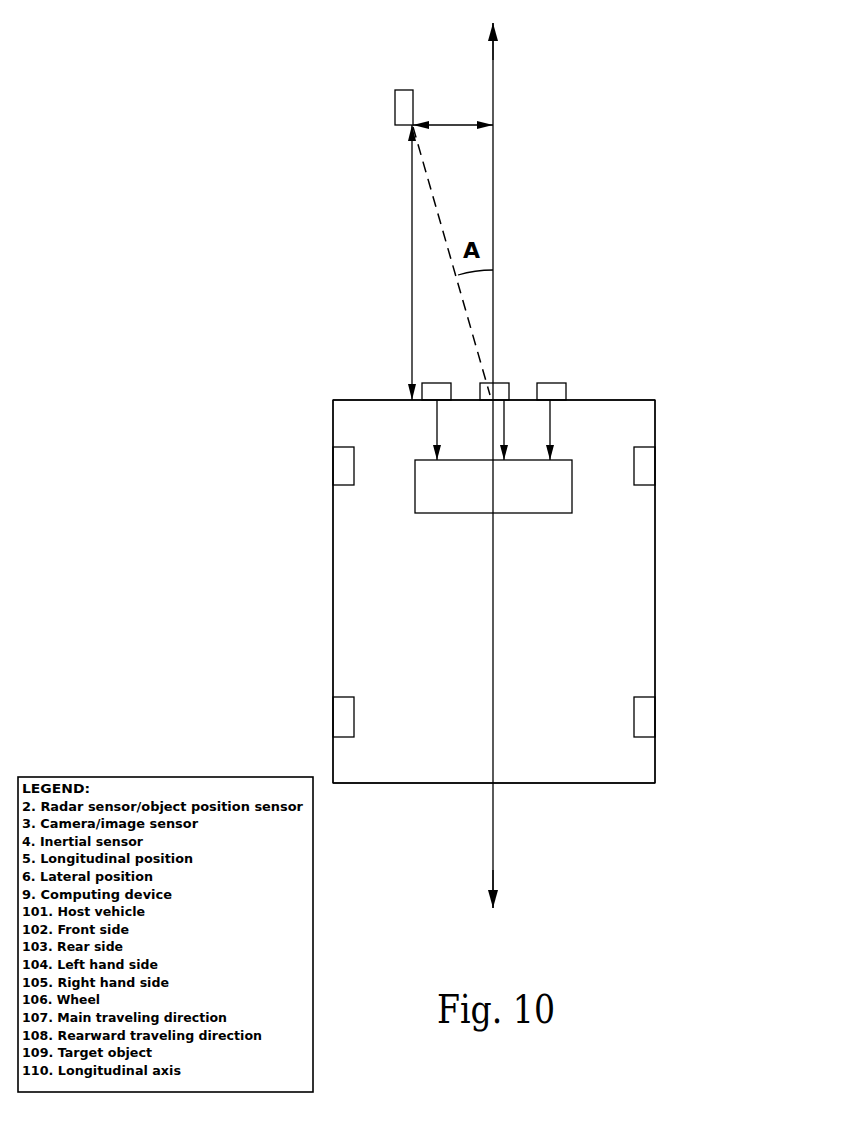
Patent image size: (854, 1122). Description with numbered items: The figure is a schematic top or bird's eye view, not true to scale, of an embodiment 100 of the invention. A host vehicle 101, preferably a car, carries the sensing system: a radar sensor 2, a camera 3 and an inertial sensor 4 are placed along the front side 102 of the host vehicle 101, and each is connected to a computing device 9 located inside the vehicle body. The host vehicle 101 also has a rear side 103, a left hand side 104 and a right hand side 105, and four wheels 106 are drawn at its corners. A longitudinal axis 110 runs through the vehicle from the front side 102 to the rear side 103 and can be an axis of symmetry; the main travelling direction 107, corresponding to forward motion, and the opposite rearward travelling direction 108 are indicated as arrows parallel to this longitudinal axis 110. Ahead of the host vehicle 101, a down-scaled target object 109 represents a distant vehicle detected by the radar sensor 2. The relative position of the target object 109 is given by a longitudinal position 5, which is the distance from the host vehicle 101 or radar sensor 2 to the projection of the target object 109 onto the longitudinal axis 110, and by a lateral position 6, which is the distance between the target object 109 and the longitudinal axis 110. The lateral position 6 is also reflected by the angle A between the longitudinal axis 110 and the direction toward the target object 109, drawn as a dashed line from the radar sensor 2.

The radar sensor 2 is at (497, 383).
The camera 3 is at (556, 383).
The inertial sensor 4 is at (425, 383).
The longitudinal position 5 is at (412, 228).
The lateral position 6 is at (452, 125).
The computing device 9 is at (572, 490).
The embodiment 100 is at (728, 122).
The host vehicle 101 is at (635, 552).
The front side 102 is at (640, 398).
The rear side 103 is at (640, 785).
The left hand side 104 is at (333, 608).
The right hand side 105 is at (655, 608).
The wheels 106 is at (341, 460).
The main travelling direction 107 is at (497, 33).
The rearward travelling direction 108 is at (497, 897).
The target object 109 is at (395, 103).
The longitudinal axis 110 is at (495, 90).